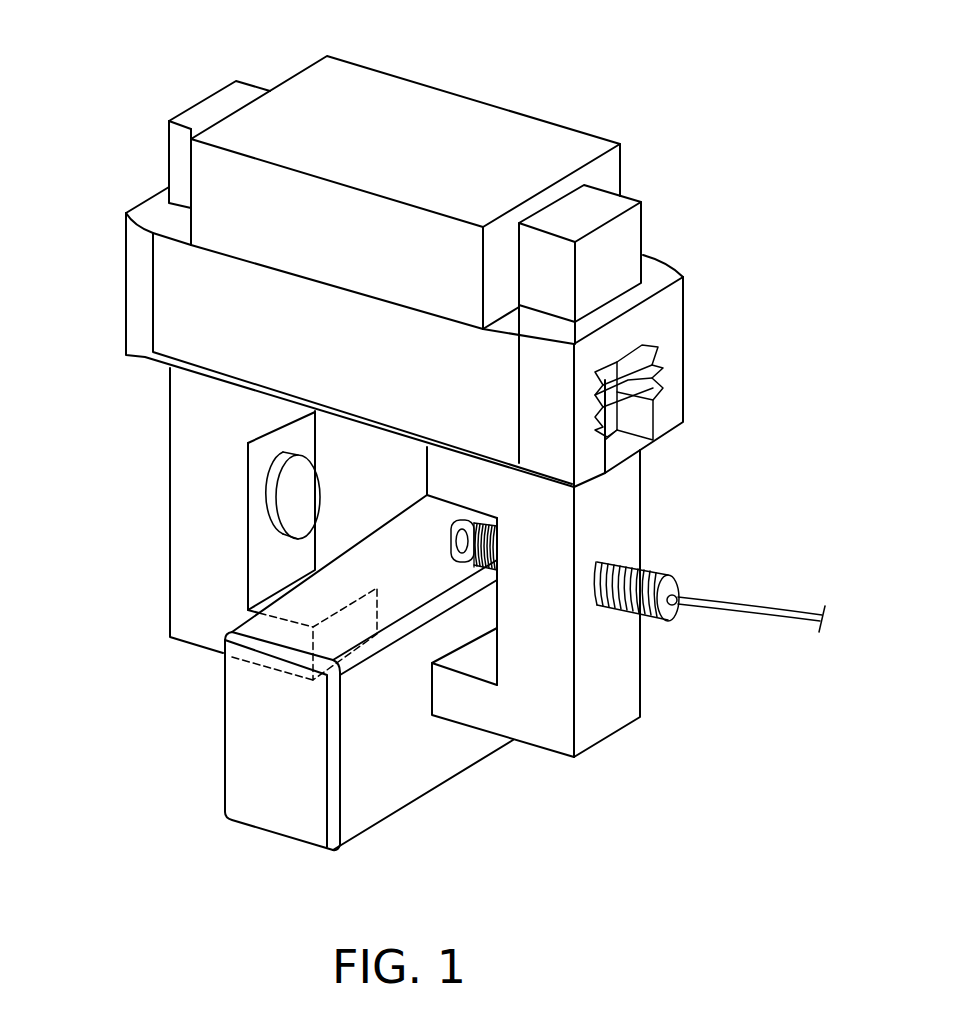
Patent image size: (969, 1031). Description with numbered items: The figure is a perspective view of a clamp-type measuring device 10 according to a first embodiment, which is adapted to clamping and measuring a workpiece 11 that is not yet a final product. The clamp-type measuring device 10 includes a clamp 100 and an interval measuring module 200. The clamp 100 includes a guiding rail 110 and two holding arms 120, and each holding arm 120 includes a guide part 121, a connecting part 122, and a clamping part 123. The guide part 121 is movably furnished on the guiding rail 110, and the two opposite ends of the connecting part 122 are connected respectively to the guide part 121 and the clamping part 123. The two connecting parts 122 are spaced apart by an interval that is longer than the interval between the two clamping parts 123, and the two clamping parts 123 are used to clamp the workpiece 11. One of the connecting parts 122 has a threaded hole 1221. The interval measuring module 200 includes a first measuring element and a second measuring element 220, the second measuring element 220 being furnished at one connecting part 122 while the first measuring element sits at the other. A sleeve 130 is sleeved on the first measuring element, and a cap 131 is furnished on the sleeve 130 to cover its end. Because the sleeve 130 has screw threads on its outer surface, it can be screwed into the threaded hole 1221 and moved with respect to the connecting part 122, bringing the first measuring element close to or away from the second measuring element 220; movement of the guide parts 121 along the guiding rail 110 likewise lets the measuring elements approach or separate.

The clamp-type measuring device 10 is at (122, 80).
The clamp 100 is at (670, 234).
The guiding rail 110 is at (645, 373).
The holding arm 120 is at (78, 380).
The guide part 121 is at (217, 387).
The connecting part 122 is at (213, 538).
The clamping part 123 is at (262, 666).
The threaded hole 1221 is at (608, 545).
The sleeve 130 is at (452, 553).
The cap 131 is at (458, 547).
The workpiece 11 is at (265, 768).
The interval measuring module 200 is at (680, 568).
The second measuring element 220 is at (310, 490).